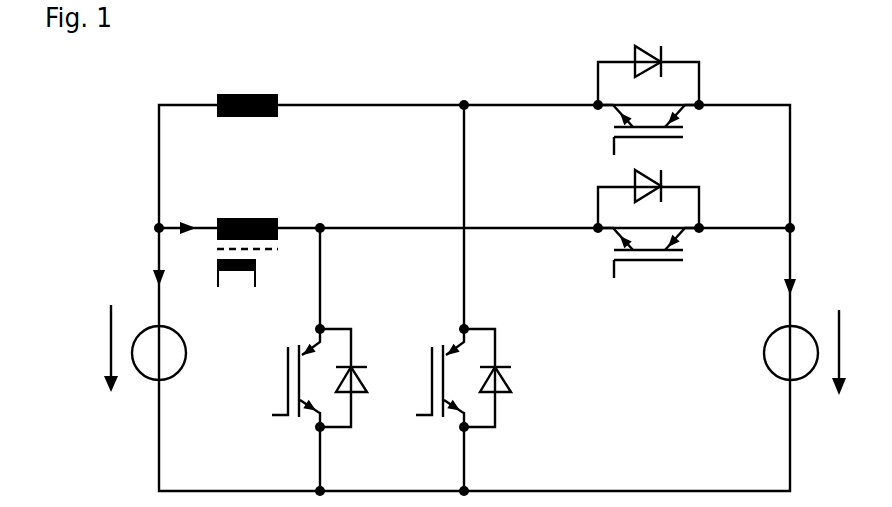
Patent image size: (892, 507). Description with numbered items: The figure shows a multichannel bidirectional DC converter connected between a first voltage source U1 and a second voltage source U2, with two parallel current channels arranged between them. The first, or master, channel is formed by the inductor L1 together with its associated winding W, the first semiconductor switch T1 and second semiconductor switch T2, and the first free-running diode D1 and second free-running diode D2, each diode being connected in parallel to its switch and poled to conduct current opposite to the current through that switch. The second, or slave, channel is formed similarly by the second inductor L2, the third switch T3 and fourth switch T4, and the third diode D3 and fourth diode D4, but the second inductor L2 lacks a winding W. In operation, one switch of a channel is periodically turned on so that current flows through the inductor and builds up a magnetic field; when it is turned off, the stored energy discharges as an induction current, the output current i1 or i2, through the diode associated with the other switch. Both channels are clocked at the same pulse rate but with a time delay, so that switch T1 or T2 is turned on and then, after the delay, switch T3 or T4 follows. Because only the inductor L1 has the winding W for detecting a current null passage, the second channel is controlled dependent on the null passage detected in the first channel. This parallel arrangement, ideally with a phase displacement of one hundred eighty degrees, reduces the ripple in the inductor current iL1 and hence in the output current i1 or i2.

The inductor L1 is at (247, 218).
The second inductor L2 is at (247, 94).
The winding W is at (247, 288).
The inductor current iL1 is at (187, 242).
The output current i1 is at (147, 300).
The output current i2 is at (801, 305).
The first voltage source U1 is at (131, 348).
The second voltage source U2 is at (821, 352).
The first semiconductor switch T1 is at (299, 378).
The first free-running diode D1 is at (357, 378).
The second semiconductor switch T2 is at (648, 260).
The second free-running diode D2 is at (648, 199).
The third switch T3 is at (443, 378).
The third diode D3 is at (501, 378).
The fourth switch T4 is at (635, 130).
The fourth diode D4 is at (648, 75).